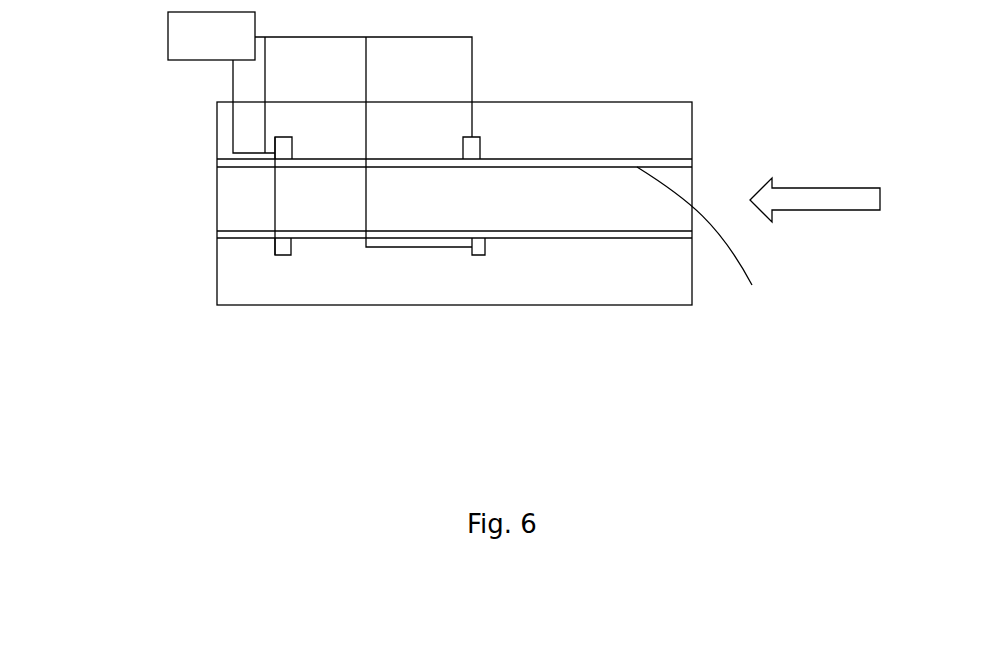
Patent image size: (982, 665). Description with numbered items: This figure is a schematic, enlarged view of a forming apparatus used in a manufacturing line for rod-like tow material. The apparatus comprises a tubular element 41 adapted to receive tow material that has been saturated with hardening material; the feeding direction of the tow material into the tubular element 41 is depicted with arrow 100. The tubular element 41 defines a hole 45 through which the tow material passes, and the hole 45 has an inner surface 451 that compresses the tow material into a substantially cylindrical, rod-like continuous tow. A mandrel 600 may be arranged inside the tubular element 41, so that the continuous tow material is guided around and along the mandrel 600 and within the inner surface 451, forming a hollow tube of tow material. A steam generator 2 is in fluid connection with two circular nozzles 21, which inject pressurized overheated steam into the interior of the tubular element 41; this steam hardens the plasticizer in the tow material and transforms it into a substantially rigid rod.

The steam generator 2 is at (209, 53).
The tubular element 41 is at (158, 157).
The circular nozzles 21 is at (478, 253).
The hole 45 is at (593, 225).
The inner surface 451 is at (667, 162).
The arrow 100 is at (848, 192).
The mandrel 600 is at (714, 249).